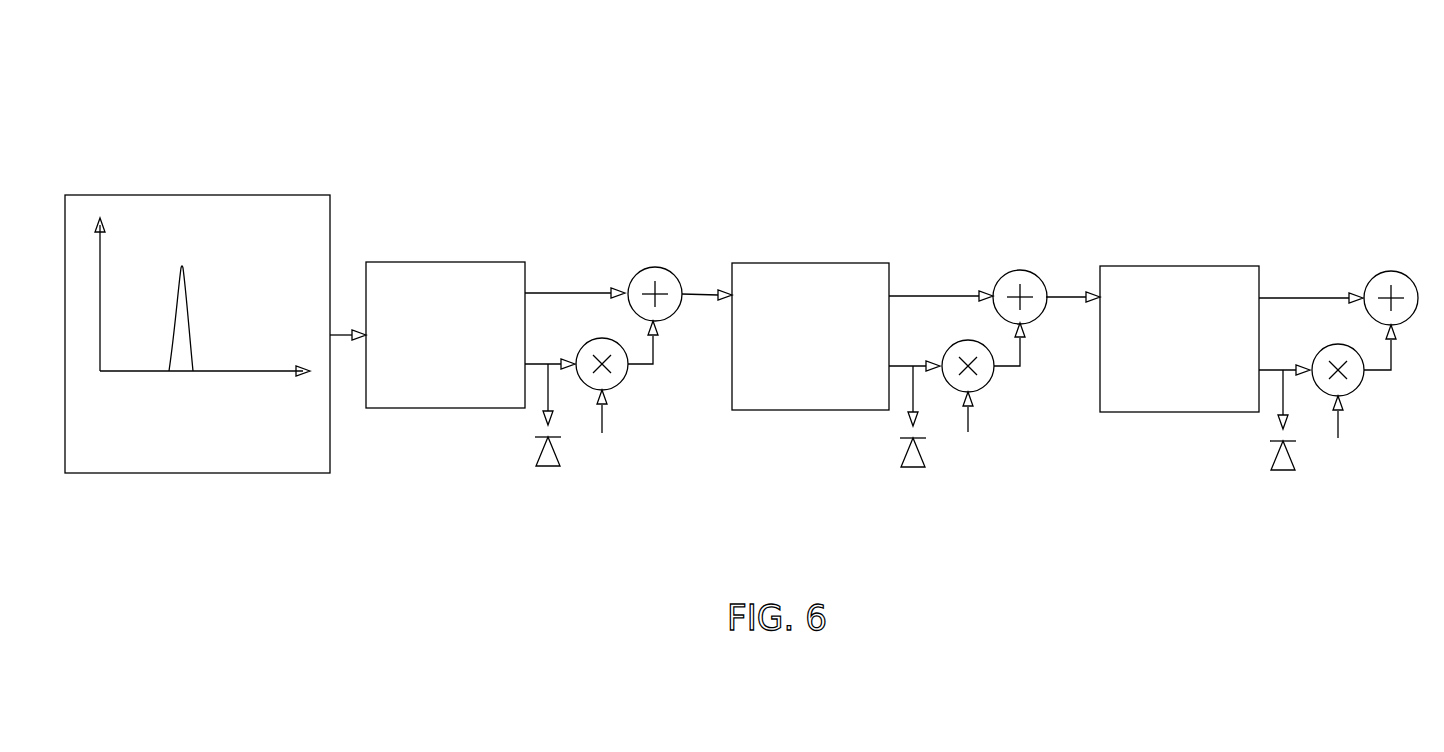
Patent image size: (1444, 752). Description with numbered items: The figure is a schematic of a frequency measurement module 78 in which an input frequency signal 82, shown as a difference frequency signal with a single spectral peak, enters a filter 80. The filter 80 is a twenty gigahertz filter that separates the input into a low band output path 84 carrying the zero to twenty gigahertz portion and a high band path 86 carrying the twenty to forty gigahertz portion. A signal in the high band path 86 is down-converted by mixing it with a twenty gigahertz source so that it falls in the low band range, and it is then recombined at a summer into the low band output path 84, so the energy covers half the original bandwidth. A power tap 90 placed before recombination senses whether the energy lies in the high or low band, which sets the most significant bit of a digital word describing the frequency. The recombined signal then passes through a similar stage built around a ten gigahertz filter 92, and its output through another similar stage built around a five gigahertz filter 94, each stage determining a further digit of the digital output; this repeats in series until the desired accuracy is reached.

The frequency measurement module 78 is at (1273, 55).
The input frequency signal 82 is at (178, 195).
The filter 80 is at (445, 262).
The low band output path 84 is at (591, 293).
The high band path 86 is at (541, 363).
The power tap 90 is at (552, 393).
The 10 GHz filter 92 is at (810, 263).
The 5 GHz filter 94 is at (1178, 266).